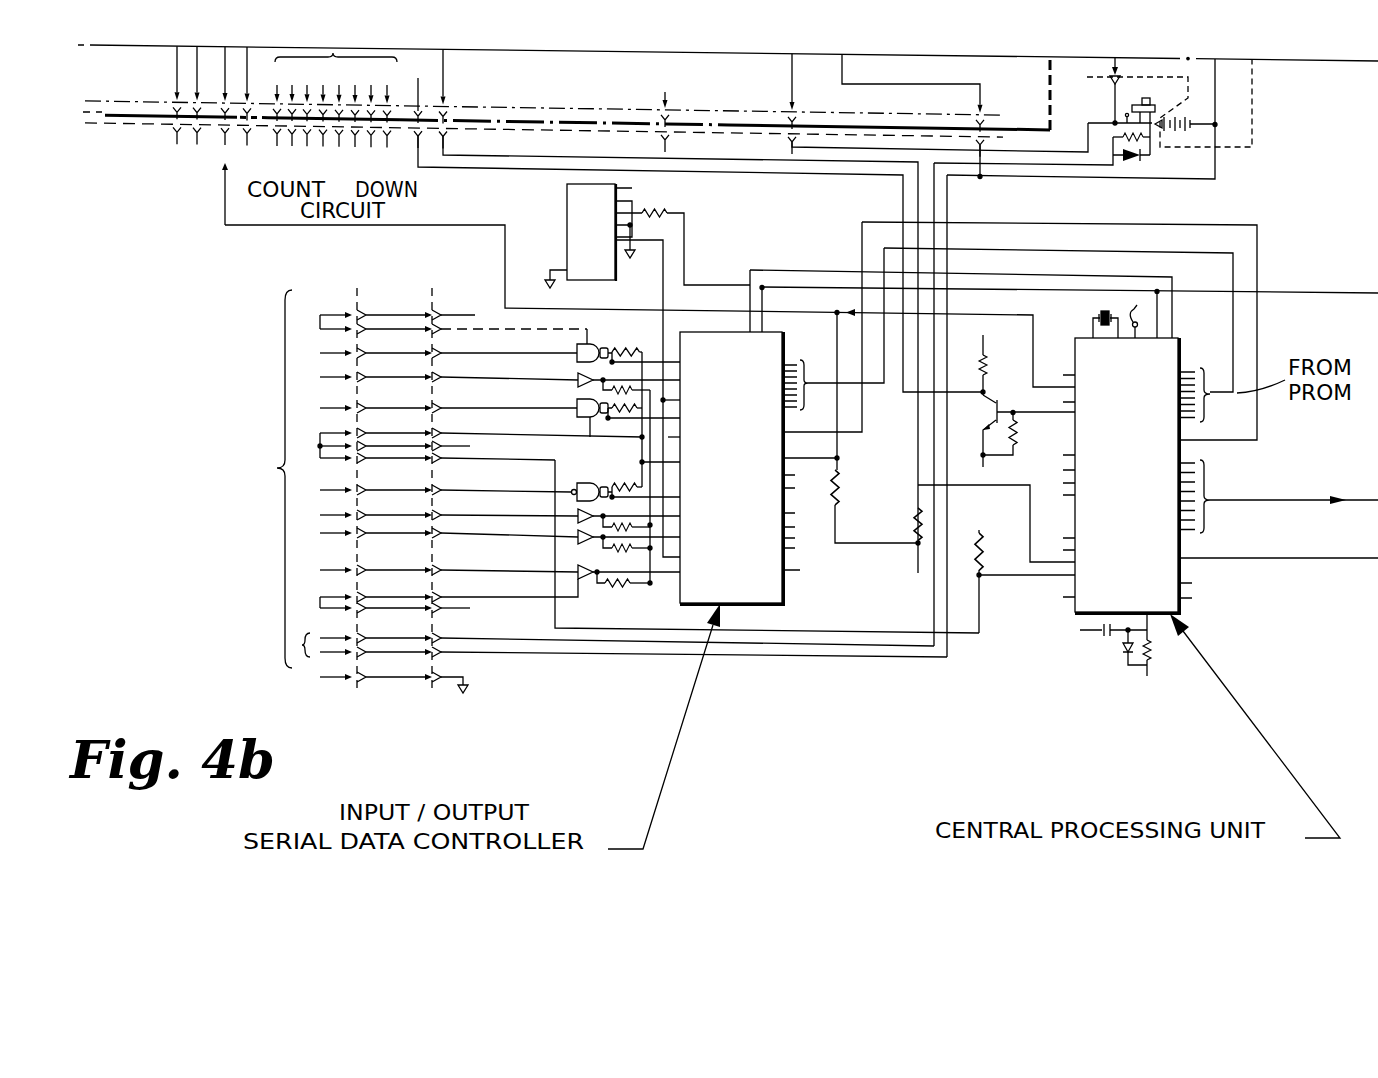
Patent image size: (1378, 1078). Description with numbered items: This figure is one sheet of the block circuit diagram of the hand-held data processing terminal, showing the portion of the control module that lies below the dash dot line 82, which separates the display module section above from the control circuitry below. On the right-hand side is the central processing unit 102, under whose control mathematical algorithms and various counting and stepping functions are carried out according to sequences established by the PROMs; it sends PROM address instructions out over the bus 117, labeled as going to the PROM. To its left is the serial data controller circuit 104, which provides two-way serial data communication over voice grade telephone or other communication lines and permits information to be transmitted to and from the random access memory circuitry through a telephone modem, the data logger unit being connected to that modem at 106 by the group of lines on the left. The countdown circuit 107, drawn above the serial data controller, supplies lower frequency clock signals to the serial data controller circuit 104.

The dash dot line 82 is at (627, 120).
The central processing unit 102 is at (1073, 600).
The serial data controller circuit 104 is at (783, 588).
The telephone modem connection 106 is at (498, 490).
The countdown circuit 107 is at (582, 198).
The bus 117 is at (1270, 505).